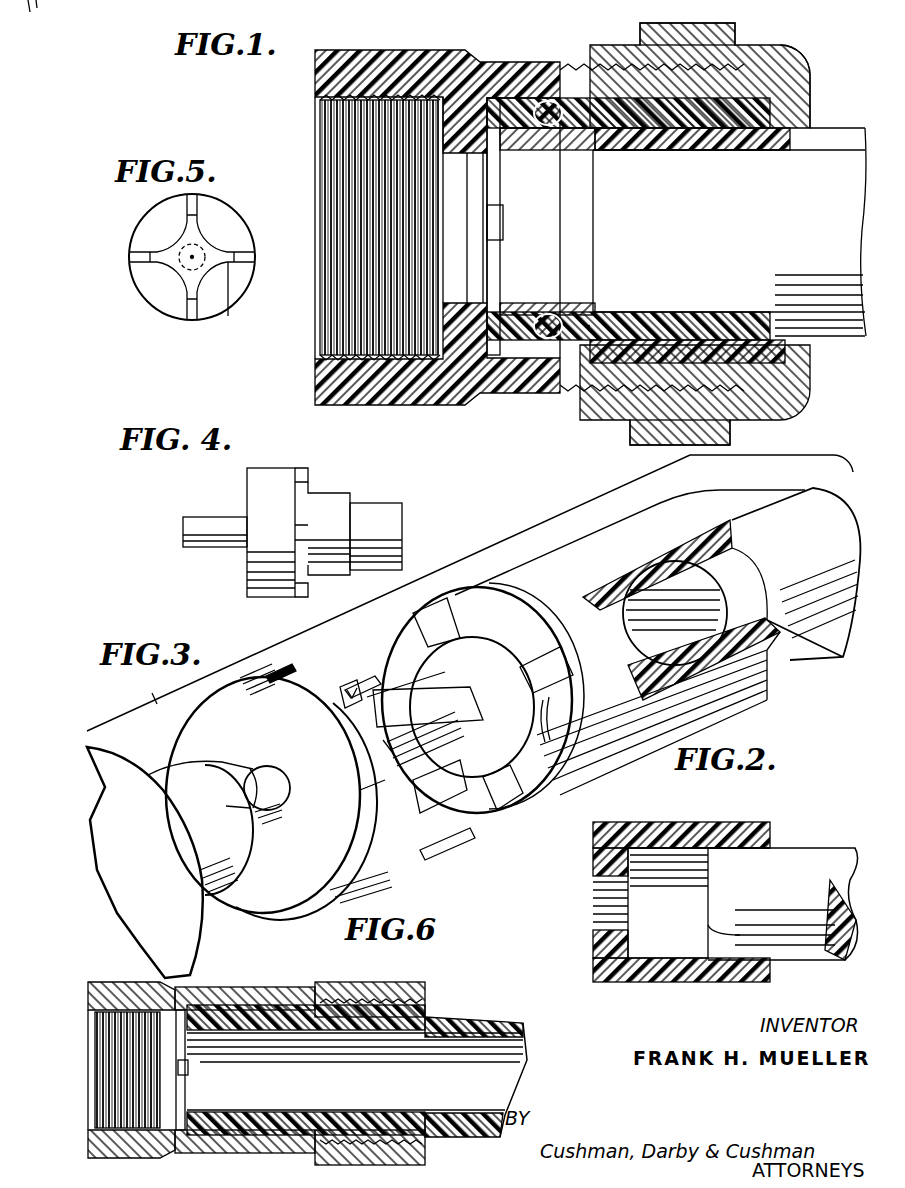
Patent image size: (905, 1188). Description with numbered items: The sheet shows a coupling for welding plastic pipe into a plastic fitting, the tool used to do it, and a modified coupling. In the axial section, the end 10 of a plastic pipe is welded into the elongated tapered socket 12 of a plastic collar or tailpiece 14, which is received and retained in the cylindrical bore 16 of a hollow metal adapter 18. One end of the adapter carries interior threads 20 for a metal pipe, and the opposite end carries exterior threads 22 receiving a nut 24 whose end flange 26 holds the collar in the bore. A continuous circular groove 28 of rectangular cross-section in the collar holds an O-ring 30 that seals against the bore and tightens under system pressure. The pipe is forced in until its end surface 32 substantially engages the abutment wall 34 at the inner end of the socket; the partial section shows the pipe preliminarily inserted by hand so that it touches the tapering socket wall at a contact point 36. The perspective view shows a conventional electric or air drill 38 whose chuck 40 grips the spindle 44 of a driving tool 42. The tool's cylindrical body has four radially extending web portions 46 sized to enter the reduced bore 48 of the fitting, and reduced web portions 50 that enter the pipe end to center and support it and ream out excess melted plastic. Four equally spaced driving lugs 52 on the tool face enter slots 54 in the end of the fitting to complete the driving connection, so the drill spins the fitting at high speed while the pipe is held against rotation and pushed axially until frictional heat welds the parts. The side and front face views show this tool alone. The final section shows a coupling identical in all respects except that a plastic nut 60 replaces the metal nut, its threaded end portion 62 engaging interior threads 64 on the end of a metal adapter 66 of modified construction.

In FIG. 1, the end of plastic pipe 10 is at (825, 140).
In FIG. 3, the end of plastic pipe 10 is at (766, 500).
In FIG. 2, the end of plastic pipe 10 is at (785, 865).
In FIG. 6, the end of plastic pipe 10 is at (385, 1036).
In FIG. 1, the tapered socket 12 is at (760, 405).
In FIG. 2, the tapered socket 12 is at (660, 846).
In FIG. 1, the plastic collar or tailpiece 14 is at (552, 380).
In FIG. 3, the plastic collar or tailpiece 14 is at (600, 538).
In FIG. 2, the plastic collar or tailpiece 14 is at (597, 975).
In FIG. 6, the plastic collar or tailpiece 14 is at (262, 1036).
In FIG. 1, the cylindrical bore 16 is at (562, 75).
In FIG. 1, the hollow metal adapter 18 is at (470, 75).
In FIG. 1, the interior threads 20 is at (380, 227).
In FIG. 1, the exterior threads 22 is at (700, 75).
In FIG. 1, the nut 24 is at (650, 30).
In FIG. 1, the end flange 26 is at (805, 95).
In FIG. 1, the circular groove 28 is at (548, 318).
In FIG. 3, the circular groove 28 is at (512, 590).
In FIG. 1, the sealing ring 30 is at (546, 128).
In FIG. 1, the end surface of pipe 32 is at (610, 138).
In FIG. 2, the end surface of pipe 32 is at (734, 942).
In FIG. 1, the abutment wall 34 is at (577, 308).
In FIG. 2, the abutment wall 34 is at (669, 870).
In FIG. 1, the contact point 36 is at (645, 418).
In FIG. 2, the contact point 36 is at (708, 848).
In FIG. 3, the drill 38 is at (113, 770).
In FIG. 3, the chuck 40 is at (226, 865).
In FIG. 5, the driving tool 42 is at (224, 212).
In FIG. 4, the driving tool 42 is at (266, 480).
In FIG. 3, the driving tool 42 is at (230, 705).
In FIG. 5, the spindle 44 is at (207, 250).
In FIG. 4, the spindle 44 is at (205, 528).
In FIG. 3, the spindle 44 is at (272, 778).
In FIG. 5, the web portions 46 is at (246, 284).
In FIG. 4, the web portions 46 is at (332, 500).
In FIG. 3, the web portions 46 is at (346, 687).
In FIG. 1, the reduced bore 48 is at (525, 135).
In FIG. 3, the reduced bore 48 is at (480, 644).
In FIG. 5, the reduced web portions 50 is at (232, 299).
In FIG. 4, the reduced web portions 50 is at (372, 510).
In FIG. 3, the reduced web portions 50 is at (373, 688).
In FIG. 5, the driving lugs 52 is at (250, 258).
In FIG. 4, the driving lugs 52 is at (306, 480).
In FIG. 3, the driving lugs 52 is at (298, 598).
In FIG. 1, the slots 54 is at (487, 108).
In FIG. 3, the slots 54 is at (505, 822).
In FIG. 6, the slots 54 is at (122, 985).
In FIG. 6, the plastic nut 60 is at (382, 1059).
In FIG. 6, the threaded end portion 62 is at (365, 1003).
In FIG. 6, the interior threads 64 is at (338, 1005).
In FIG. 6, the metal adapter of modified construction 66 is at (262, 1000).